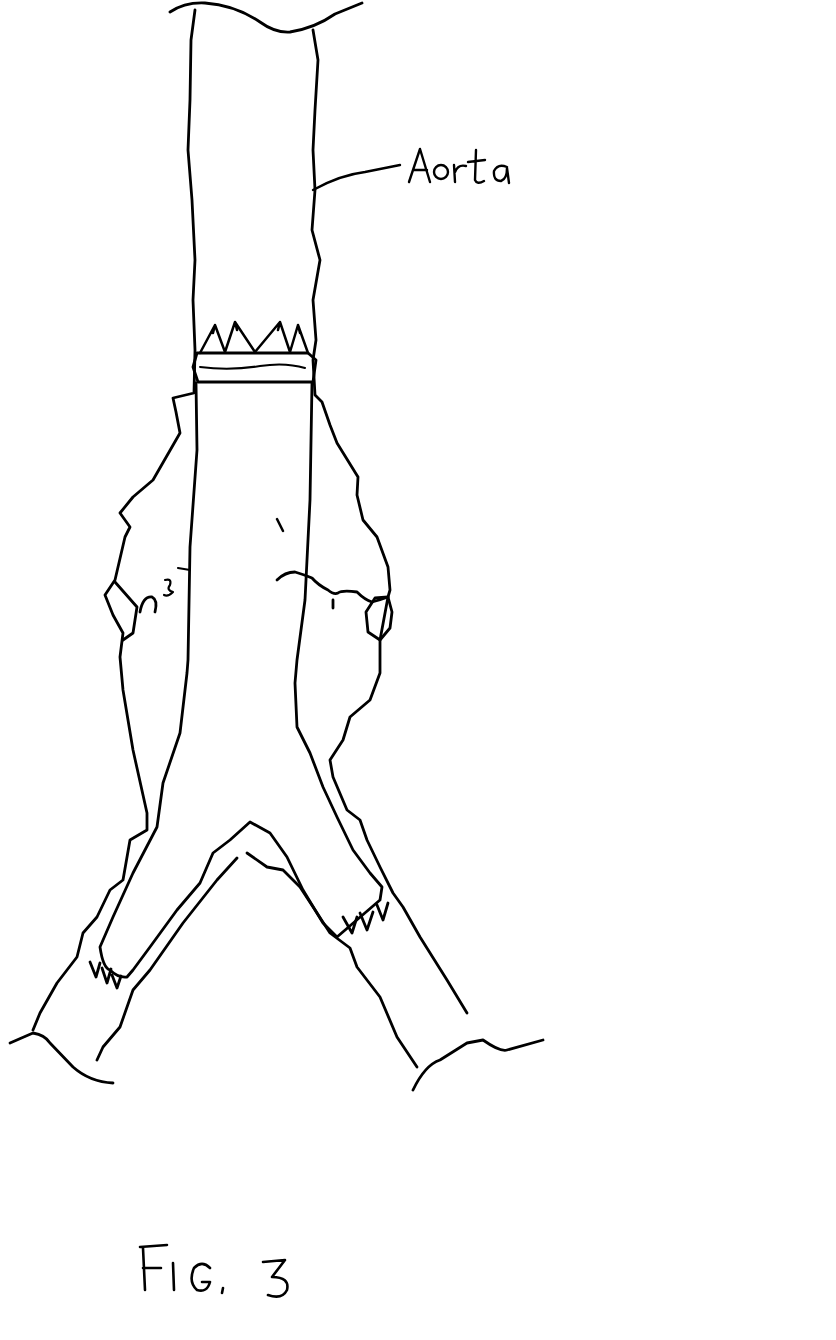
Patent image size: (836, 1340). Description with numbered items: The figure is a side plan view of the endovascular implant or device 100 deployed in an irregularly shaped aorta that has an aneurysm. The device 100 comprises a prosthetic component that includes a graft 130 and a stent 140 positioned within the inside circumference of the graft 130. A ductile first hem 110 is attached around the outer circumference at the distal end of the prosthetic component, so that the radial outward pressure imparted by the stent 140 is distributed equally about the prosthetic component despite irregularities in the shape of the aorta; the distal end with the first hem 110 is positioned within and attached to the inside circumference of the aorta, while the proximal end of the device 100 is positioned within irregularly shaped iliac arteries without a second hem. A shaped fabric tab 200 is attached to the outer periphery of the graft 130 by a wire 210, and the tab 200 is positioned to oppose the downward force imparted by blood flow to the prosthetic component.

The endovascular implant or device 100 is at (313, 452).
The first hem 110 is at (320, 362).
The graft 130 is at (280, 527).
The stent 140 is at (258, 320).
The tab 200 is at (105, 597).
The wire 210 is at (167, 577).